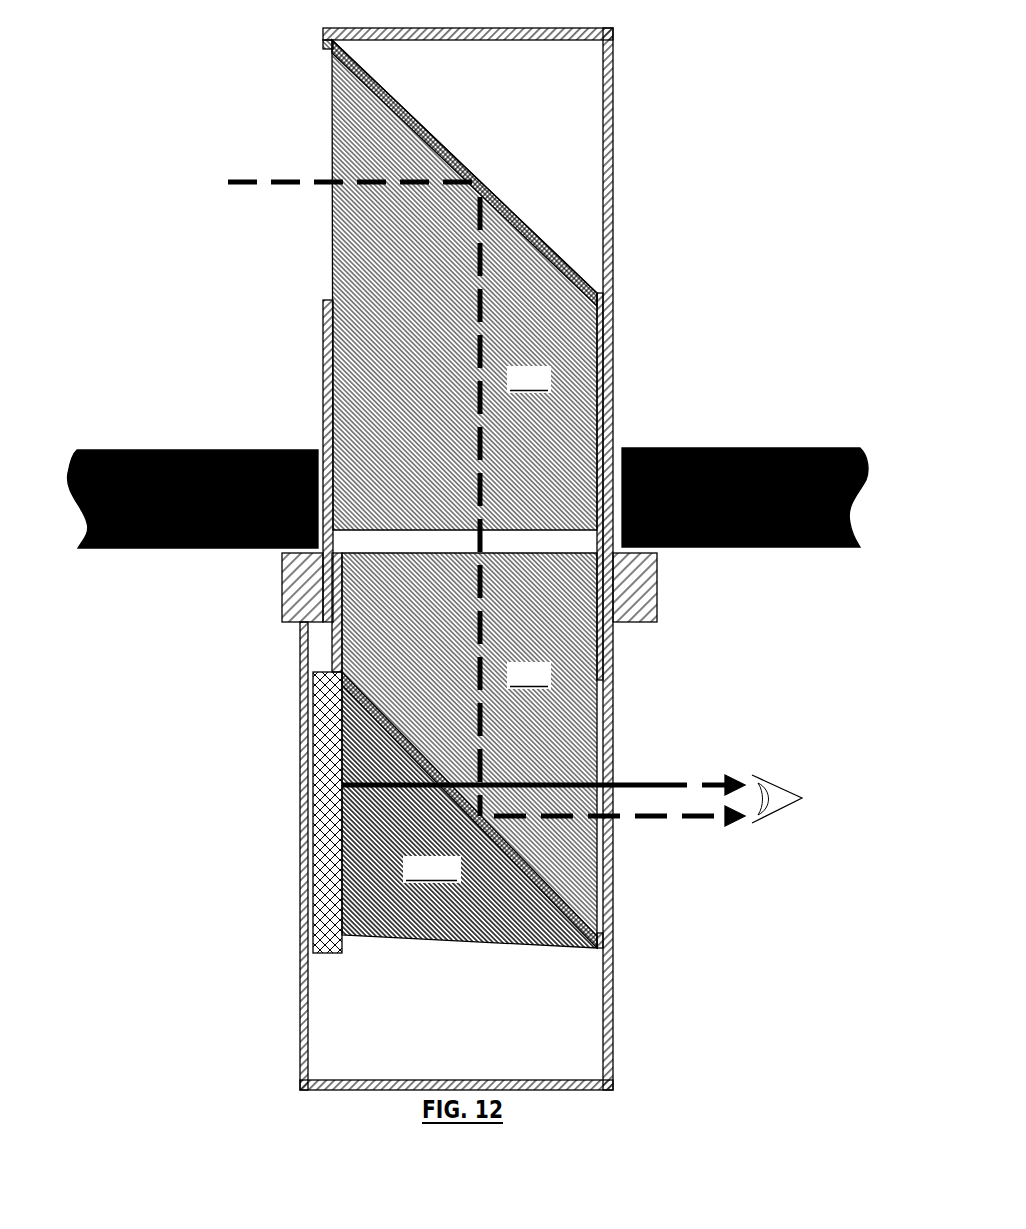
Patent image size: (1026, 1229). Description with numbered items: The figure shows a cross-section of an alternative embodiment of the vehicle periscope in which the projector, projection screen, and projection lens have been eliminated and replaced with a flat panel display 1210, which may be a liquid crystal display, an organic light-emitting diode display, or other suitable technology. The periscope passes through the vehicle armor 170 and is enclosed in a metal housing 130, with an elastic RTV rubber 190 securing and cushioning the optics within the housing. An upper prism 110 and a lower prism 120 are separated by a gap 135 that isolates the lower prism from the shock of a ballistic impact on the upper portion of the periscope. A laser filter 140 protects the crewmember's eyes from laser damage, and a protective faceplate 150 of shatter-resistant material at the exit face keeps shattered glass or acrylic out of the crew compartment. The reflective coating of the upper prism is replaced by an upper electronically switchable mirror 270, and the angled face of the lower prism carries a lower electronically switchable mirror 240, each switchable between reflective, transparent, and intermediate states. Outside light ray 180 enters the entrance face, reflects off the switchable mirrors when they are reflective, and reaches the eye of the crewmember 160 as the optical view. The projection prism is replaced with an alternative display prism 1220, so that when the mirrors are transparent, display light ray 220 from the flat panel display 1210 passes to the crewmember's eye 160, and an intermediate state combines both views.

The upper prism 110 is at (464, 285).
The lower prism 120 is at (469, 750).
The alternative display prism 1220 is at (469, 816).
The housing 130 is at (323, 32).
The gap 135 is at (332, 630).
The laser filter 140 is at (330, 277).
The protective faceplate 150 is at (610, 877).
The eye of the crewmember 160 is at (770, 775).
The armor 170 is at (720, 448).
The light ray 180 is at (280, 180).
The RTV rubber 190 is at (325, 43).
The light ray 220 is at (342, 805).
The lower electronically switchable mirror 240 is at (430, 800).
The upper electronically switchable mirror 270 is at (533, 220).
The flat panel display 1210 is at (306, 890).